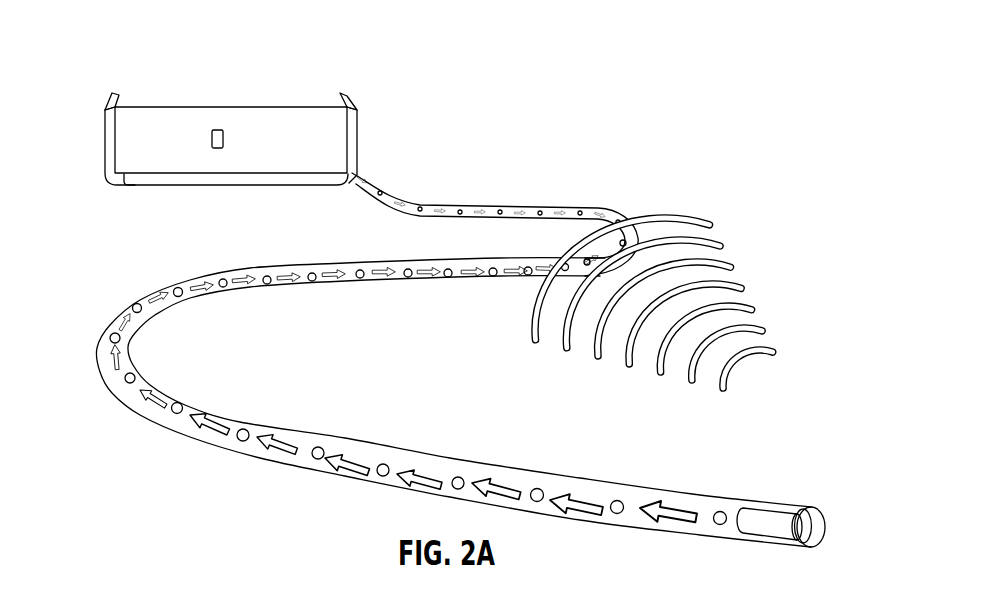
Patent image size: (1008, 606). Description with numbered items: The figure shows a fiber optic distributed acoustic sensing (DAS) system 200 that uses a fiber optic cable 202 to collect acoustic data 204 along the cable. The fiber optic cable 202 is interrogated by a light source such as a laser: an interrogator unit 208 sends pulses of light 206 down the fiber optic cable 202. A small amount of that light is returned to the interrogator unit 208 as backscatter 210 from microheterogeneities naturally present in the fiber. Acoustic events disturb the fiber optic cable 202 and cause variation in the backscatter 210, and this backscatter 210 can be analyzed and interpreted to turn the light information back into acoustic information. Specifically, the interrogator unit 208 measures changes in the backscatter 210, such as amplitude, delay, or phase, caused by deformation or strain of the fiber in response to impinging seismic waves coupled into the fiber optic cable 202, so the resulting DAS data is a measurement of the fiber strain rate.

The fiber optic DAS system 200 is at (644, 119).
The fiber optic cable 202 is at (497, 207).
The acoustic data 204 is at (573, 348).
The pulses of light 206 is at (778, 508).
The interrogator unit 208 is at (236, 107).
The backscatter 210 is at (336, 283).